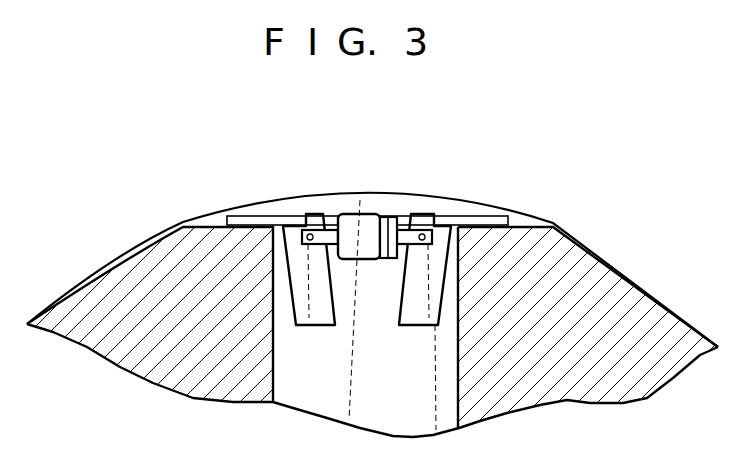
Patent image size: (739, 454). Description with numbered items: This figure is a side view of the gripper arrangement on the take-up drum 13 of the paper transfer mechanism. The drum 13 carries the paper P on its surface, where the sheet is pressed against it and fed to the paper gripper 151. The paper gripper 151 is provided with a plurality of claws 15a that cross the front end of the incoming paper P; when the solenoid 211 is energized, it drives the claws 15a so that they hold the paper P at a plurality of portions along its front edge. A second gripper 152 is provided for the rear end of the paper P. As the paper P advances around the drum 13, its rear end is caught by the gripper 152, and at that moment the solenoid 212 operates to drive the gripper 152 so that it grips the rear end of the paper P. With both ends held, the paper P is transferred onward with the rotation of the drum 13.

The paper P is at (127, 252).
The take-up drum 13 is at (583, 246).
The claws 15a is at (252, 217).
The paper gripper 151 is at (303, 216).
The gripper 152 is at (437, 216).
The solenoid 211 is at (358, 216).
The solenoid 212 is at (392, 217).